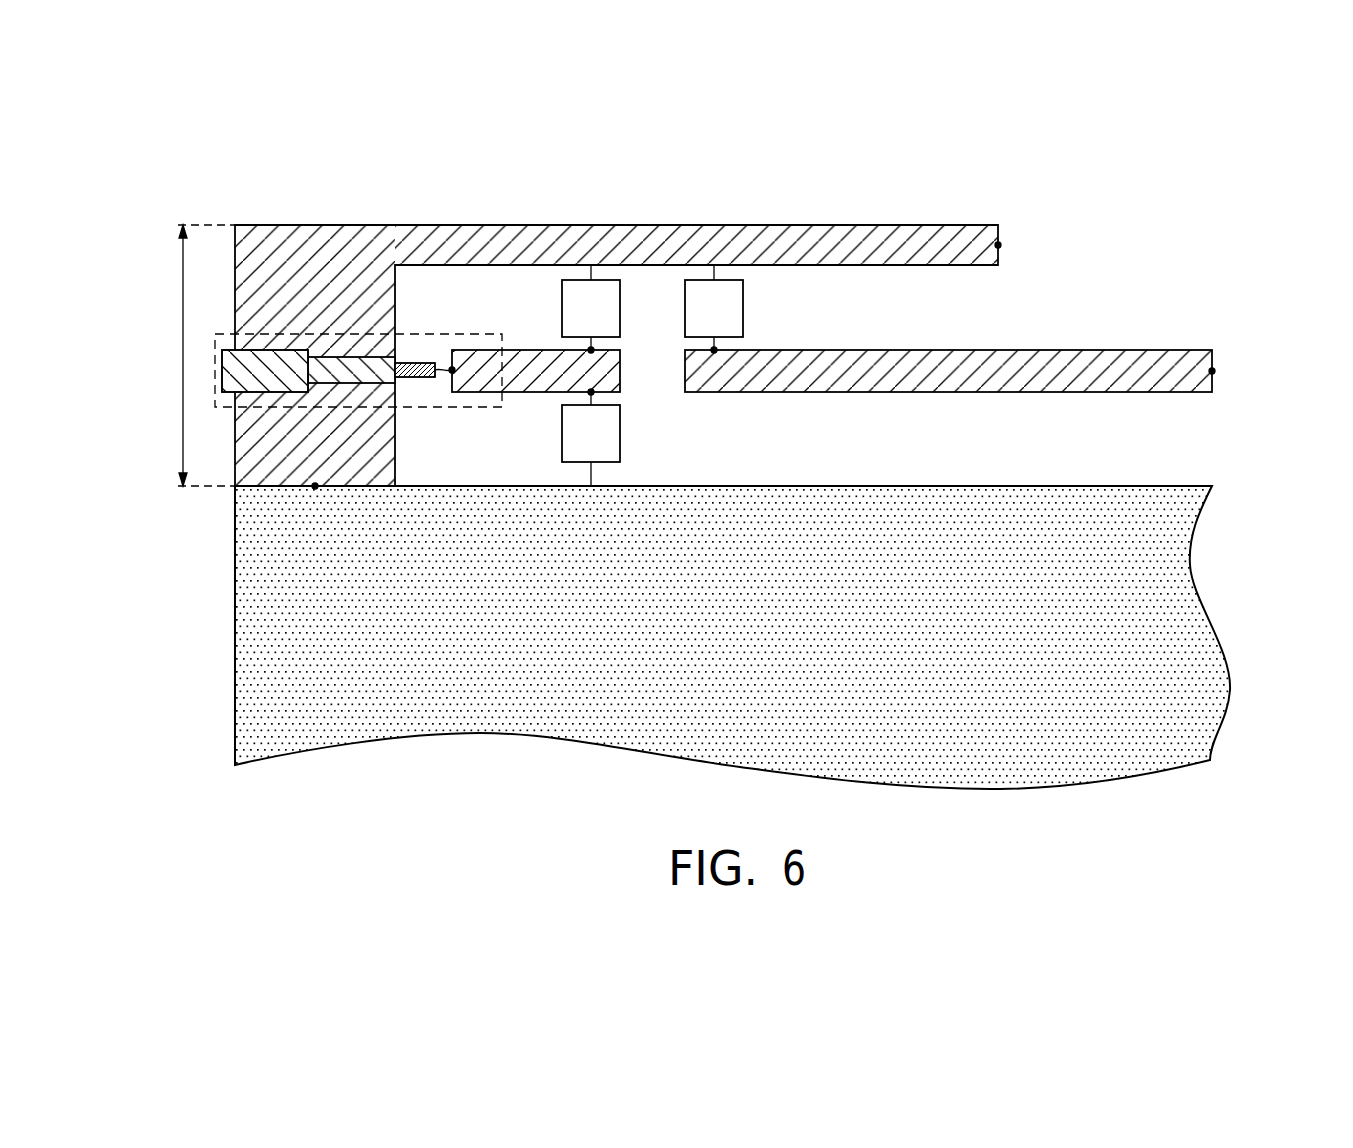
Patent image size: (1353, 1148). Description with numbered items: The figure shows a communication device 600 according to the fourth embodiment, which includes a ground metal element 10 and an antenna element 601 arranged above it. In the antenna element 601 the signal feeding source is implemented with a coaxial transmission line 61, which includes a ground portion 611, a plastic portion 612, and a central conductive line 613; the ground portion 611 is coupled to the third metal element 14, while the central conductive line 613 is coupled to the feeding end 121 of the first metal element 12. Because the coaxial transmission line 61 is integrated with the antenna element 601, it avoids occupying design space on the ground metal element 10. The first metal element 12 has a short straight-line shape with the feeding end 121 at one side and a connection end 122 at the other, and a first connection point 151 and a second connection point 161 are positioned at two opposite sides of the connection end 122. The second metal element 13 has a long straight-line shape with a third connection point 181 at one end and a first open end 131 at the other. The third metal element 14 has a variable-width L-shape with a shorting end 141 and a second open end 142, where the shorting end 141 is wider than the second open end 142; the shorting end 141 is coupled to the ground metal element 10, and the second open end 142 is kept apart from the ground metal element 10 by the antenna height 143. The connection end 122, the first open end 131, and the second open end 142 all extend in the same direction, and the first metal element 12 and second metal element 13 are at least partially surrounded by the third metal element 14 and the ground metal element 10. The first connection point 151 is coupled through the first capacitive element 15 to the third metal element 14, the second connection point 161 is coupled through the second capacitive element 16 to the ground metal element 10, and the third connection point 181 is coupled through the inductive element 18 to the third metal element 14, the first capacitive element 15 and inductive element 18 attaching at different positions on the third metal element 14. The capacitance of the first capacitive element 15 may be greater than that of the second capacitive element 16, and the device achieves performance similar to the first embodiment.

The communication device 600 is at (165, 142).
The antenna element 601 is at (312, 210).
The coaxial transmission line 61 is at (449, 334).
The ground portion 611 is at (343, 357).
The plastic portion 612 is at (412, 365).
The central conductive line 613 is at (437, 378).
The ground metal element 10 is at (1115, 740).
The first metal element 12 is at (530, 380).
The feeding end 121 is at (462, 362).
The connection end 122 is at (622, 372).
The second metal element 13 is at (940, 382).
The first open end 131 is at (1214, 371).
The third metal element 14 is at (850, 256).
The shorting end 141 is at (315, 488).
The second open end 142 is at (1000, 245).
The antenna height 143 is at (183, 355).
The first capacitive element 15 is at (620, 306).
The first connection point 151 is at (592, 352).
The second capacitive element 16 is at (562, 433).
The second connection point 161 is at (591, 392).
The inductive element 18 is at (743, 305).
The third connection point 181 is at (714, 352).